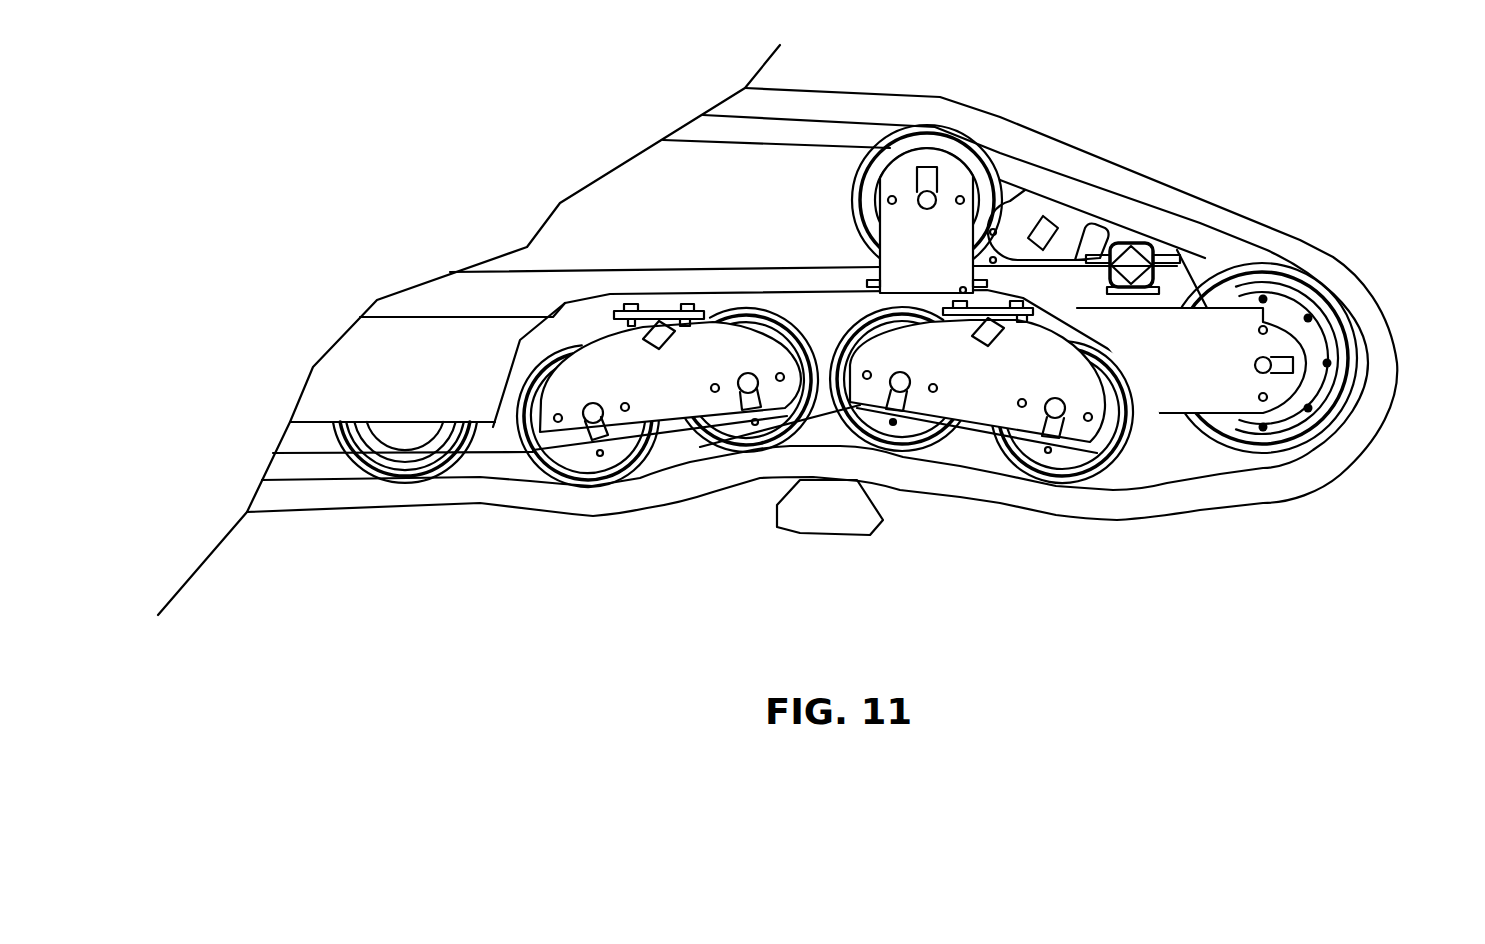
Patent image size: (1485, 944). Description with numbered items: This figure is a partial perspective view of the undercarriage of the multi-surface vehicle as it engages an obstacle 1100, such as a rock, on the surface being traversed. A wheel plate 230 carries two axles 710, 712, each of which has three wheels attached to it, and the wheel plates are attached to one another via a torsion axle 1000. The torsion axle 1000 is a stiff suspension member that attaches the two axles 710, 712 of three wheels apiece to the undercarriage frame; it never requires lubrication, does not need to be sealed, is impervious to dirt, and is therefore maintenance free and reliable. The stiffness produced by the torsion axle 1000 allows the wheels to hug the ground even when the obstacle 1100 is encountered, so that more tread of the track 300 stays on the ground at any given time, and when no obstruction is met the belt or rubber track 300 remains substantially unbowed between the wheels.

The track 300 is at (1375, 318).
The wheel plate 230 is at (587, 377).
The torsion axle 1000 is at (655, 322).
The axle 710 is at (593, 413).
The axle 712 is at (748, 389).
The obstacle 1100 is at (832, 515).